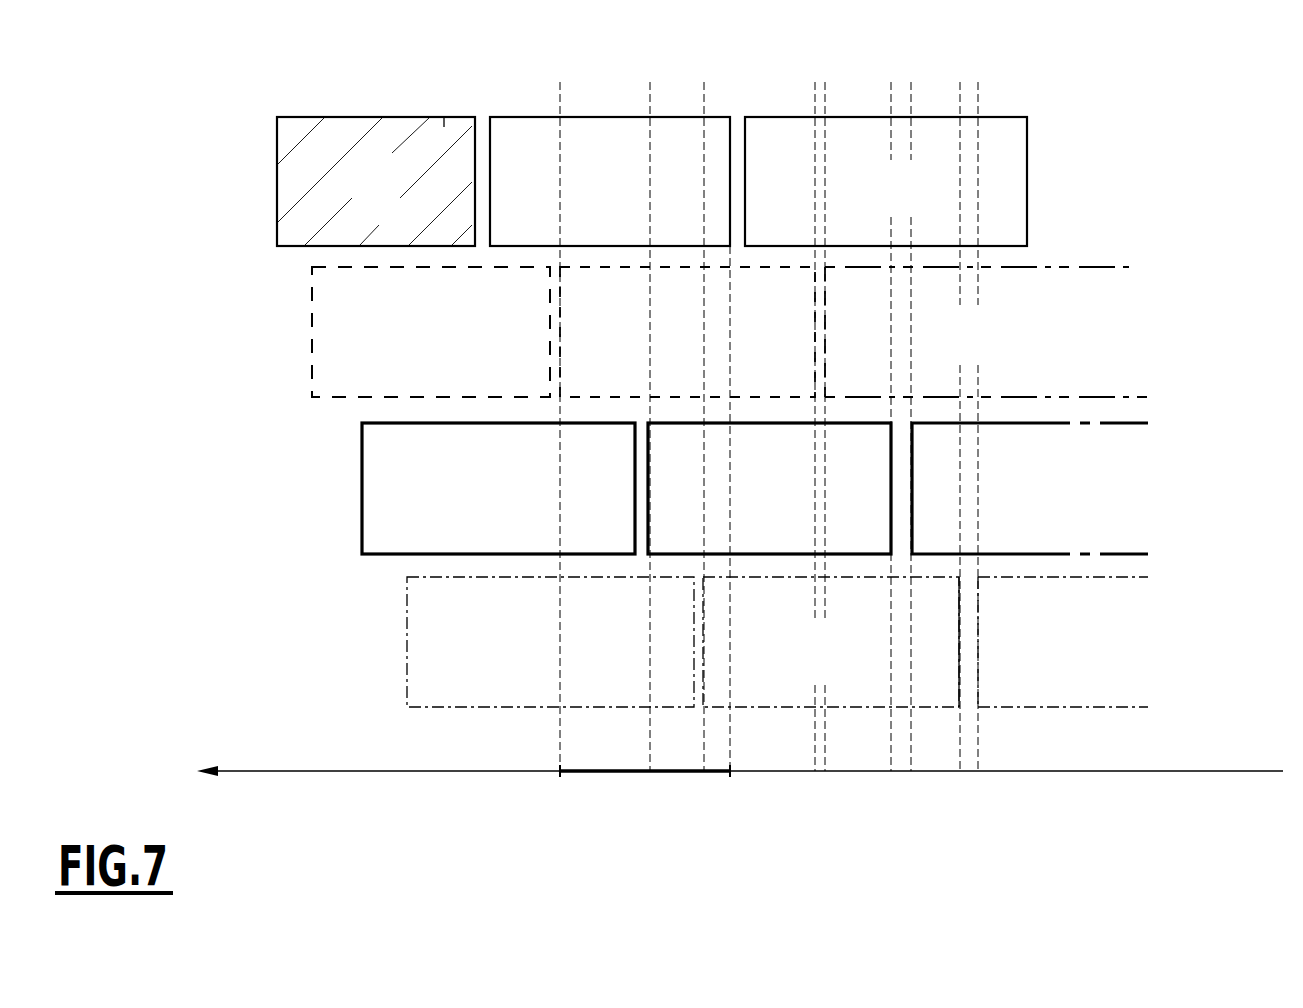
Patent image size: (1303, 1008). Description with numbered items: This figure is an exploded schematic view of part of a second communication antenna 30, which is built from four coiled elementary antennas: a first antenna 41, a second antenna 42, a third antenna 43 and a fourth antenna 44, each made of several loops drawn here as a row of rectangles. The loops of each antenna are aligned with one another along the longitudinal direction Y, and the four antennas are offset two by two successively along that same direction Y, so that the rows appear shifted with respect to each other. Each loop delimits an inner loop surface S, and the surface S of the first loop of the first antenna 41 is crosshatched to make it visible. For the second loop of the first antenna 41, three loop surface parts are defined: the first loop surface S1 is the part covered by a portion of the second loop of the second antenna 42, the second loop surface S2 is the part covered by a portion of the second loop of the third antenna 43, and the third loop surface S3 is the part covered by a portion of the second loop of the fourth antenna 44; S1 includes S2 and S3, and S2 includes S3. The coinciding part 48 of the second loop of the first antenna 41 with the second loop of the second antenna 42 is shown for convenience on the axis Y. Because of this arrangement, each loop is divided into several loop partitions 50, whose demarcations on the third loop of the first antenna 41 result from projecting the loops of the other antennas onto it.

The second communication antenna 30 is at (200, 102).
The first antenna 41 is at (1120, 165).
The second antenna 42 is at (1163, 337).
The third antenna 43 is at (1173, 492).
The fourth antenna 44 is at (1175, 647).
The coinciding part 48 is at (621, 777).
The loop partition 50 is at (779, 127).
The loop surface S is at (444, 127).
The first loop surface S1 is at (603, 125).
The second loop surface S2 is at (670, 125).
The third loop surface S3 is at (716, 127).
The longitudinal direction Y is at (729, 771).